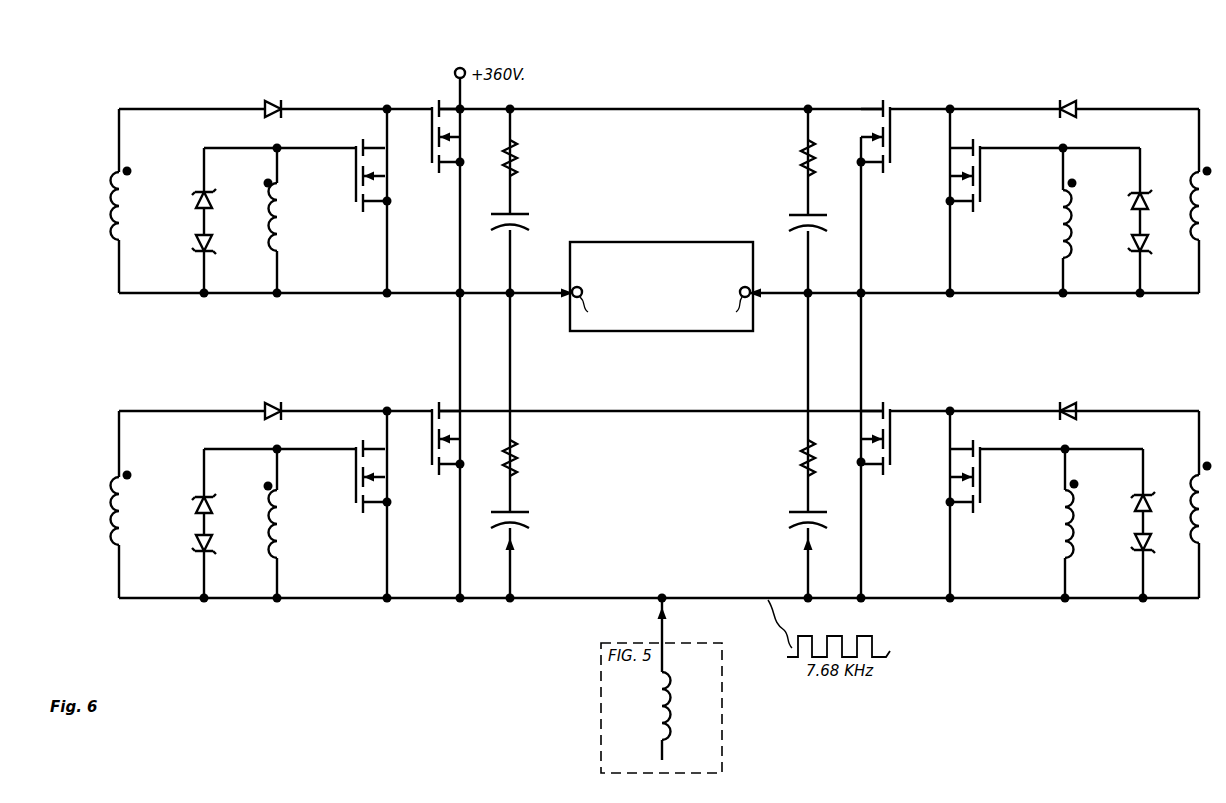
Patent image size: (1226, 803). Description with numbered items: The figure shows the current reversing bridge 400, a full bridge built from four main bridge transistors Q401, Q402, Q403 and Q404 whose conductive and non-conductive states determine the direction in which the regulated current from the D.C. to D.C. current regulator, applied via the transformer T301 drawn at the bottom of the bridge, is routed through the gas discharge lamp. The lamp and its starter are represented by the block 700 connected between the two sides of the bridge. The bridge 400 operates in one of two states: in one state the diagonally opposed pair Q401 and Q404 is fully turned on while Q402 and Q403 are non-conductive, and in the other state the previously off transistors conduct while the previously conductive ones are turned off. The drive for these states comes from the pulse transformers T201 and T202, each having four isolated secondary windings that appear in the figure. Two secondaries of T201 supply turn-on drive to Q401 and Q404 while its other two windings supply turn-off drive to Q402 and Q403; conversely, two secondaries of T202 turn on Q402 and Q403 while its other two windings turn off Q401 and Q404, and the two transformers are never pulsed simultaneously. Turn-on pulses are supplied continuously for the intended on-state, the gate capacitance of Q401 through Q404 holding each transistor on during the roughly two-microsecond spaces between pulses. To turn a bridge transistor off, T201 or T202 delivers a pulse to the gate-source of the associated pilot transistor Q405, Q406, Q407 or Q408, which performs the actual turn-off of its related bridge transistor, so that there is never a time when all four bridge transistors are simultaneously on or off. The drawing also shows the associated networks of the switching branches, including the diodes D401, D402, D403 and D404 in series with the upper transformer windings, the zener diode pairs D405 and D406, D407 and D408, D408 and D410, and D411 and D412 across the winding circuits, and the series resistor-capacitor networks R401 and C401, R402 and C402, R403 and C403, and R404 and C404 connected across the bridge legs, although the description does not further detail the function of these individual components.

The current reversing bridge 400 is at (946, 60).
The starter and lamp 700 is at (662, 243).
The diode D401 is at (275, 101).
The diode D402 is at (1072, 102).
The diode D403 is at (274, 404).
The diode D404 is at (1075, 404).
The zener diode D405 is at (196, 202).
The zener diode D406 is at (196, 244).
The zener diode D407 is at (1133, 194).
The zener diode D408 is at (1134, 248).
The zener diode D410 is at (196, 548).
The zener diode D411 is at (1135, 498).
The zener diode D412 is at (1134, 550).
The bridge transistor Q401 is at (436, 105).
The bridge transistor Q402 is at (889, 170).
The bridge transistor Q403 is at (436, 406).
The bridge transistor Q404 is at (888, 406).
The pilot transistor Q405 is at (354, 190).
The pilot transistor Q406 is at (970, 168).
The pilot transistor Q407 is at (354, 512).
The pilot transistor Q408 is at (952, 478).
The resistor R401 is at (522, 158).
The resistor R402 is at (800, 160).
The resistor R403 is at (522, 440).
The resistor R404 is at (800, 440).
The capacitor C401 is at (530, 218).
The capacitor C402 is at (794, 216).
The capacitor C403 is at (530, 516).
The capacitor C404 is at (794, 514).
The pulse transformer T201 is at (112, 182).
The pulse transformer T202 is at (1195, 184).
The transformer T301 is at (662, 740).